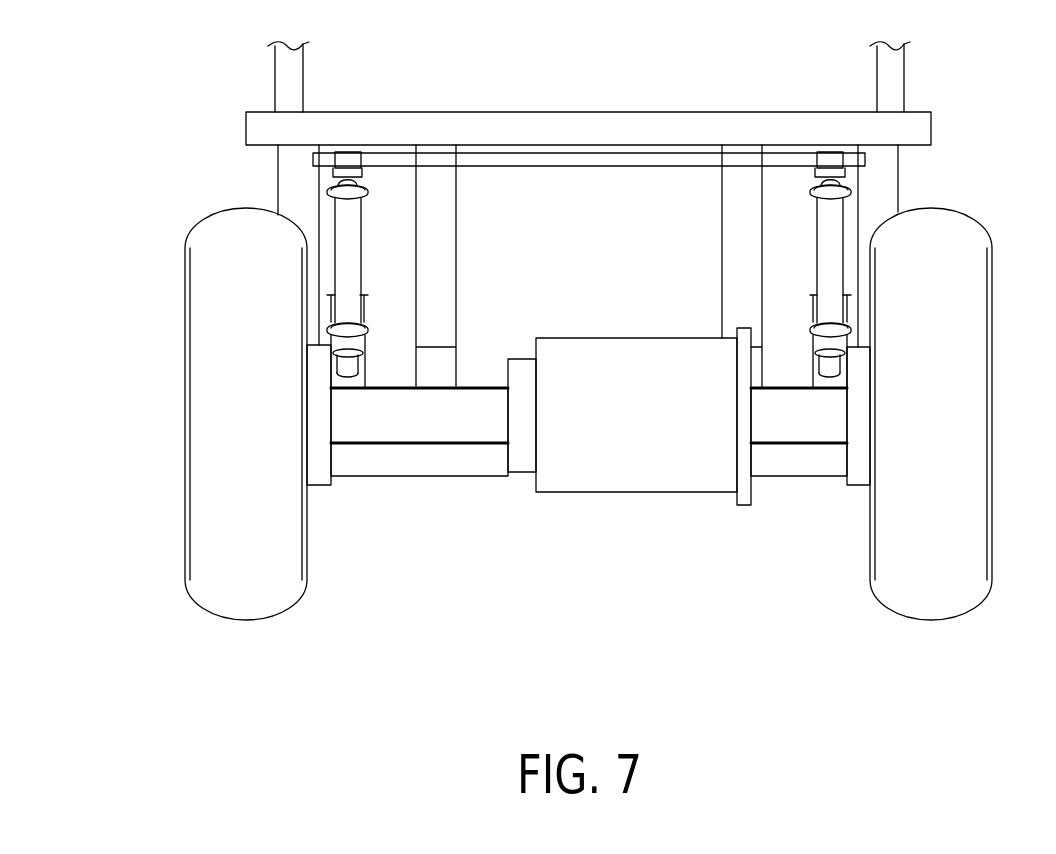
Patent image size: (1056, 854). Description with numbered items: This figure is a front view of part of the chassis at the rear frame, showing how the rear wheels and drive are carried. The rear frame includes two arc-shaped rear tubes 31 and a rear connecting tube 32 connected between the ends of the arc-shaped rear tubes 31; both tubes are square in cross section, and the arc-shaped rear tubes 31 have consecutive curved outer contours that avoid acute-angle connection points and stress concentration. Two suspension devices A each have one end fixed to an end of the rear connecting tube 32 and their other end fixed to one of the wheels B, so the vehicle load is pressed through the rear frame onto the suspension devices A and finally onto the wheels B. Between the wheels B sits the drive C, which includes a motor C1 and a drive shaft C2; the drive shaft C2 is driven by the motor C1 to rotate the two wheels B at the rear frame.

The suspension device A is at (850, 218).
The wheel B is at (976, 352).
The arc-shaped rear tube 31 is at (728, 237).
The rear connecting tube 32 is at (555, 158).
The drive C is at (589, 470).
The motor C1 is at (670, 470).
The drive shaft C2 is at (452, 420).